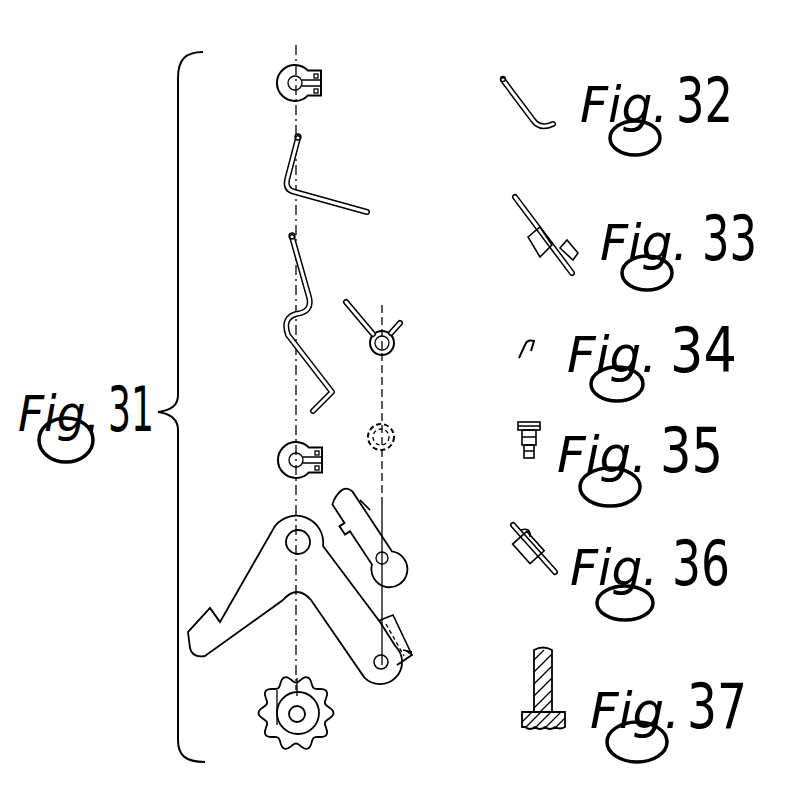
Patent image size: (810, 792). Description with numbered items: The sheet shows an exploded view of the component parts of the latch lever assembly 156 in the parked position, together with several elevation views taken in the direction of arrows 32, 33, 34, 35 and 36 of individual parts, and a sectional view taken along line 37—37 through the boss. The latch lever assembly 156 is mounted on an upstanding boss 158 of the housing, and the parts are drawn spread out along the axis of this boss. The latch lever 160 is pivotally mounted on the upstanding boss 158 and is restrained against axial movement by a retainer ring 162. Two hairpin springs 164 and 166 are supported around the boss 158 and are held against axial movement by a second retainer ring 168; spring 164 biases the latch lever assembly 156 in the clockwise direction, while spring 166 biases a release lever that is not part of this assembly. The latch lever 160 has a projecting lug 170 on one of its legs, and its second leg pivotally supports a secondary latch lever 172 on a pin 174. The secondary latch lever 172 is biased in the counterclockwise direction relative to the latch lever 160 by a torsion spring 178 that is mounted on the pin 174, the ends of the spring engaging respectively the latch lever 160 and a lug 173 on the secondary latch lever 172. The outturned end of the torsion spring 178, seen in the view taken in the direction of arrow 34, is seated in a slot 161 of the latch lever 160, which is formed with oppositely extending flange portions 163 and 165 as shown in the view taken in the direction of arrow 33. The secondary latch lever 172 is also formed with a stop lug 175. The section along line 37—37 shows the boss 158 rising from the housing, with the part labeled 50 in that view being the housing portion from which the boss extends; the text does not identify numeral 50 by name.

In FIG. 31, the arrow 32 is at (385, 357).
In FIG. 31, the arrow 33 is at (357, 652).
In FIG. 31, the arrow 34 is at (398, 345).
In FIG. 31, the arrow 35 is at (383, 448).
In FIG. 31, the arrow 36 is at (348, 541).
In FIG. 31, the section line 37 is at (237, 690).
In FIG. 31, the knob / base 50 is at (287, 740).
In FIG. 37, the knob / base 50 is at (521, 720).
In FIG. 31, the latch lever assembly 156 is at (293, 387).
In FIG. 31, the upstanding boss 158 is at (300, 722).
In FIG. 37, the upstanding boss 158 is at (534, 652).
In FIG. 31, the latch lever 160 is at (262, 573).
In FIG. 33, the latch lever 160 is at (568, 198).
In FIG. 31, the slot 161 is at (402, 648).
In FIG. 31, the retainer ring 162 is at (278, 460).
In FIG. 31, the flange portion 163 is at (394, 620).
In FIG. 33, the flange portion 163 is at (528, 246).
In FIG. 31, the hairpin spring 164 is at (286, 322).
In FIG. 32, the hairpin spring 164 is at (513, 102).
In FIG. 31, the flange portion 165 is at (412, 658).
In FIG. 33, the flange portion 165 is at (569, 241).
In FIG. 31, the hairpin spring 166 is at (285, 168).
In FIG. 31, the second retainer ring 168 is at (305, 68).
In FIG. 31, the projecting lug 170 is at (208, 607).
In FIG. 31, the secondary latch lever 172 is at (440, 550).
In FIG. 36, the secondary latch lever 172 is at (548, 563).
In FIG. 31, the lug 173 is at (343, 524).
In FIG. 36, the lug 173 is at (533, 528).
In FIG. 31, the pin 174 is at (391, 430).
In FIG. 35, the pin 174 is at (528, 421).
In FIG. 31, the stop lug 175 is at (378, 503).
In FIG. 36, the stop lug 175 is at (515, 548).
In FIG. 31, the torsion spring 178 is at (358, 309).
In FIG. 34, the torsion spring 178 is at (518, 356).